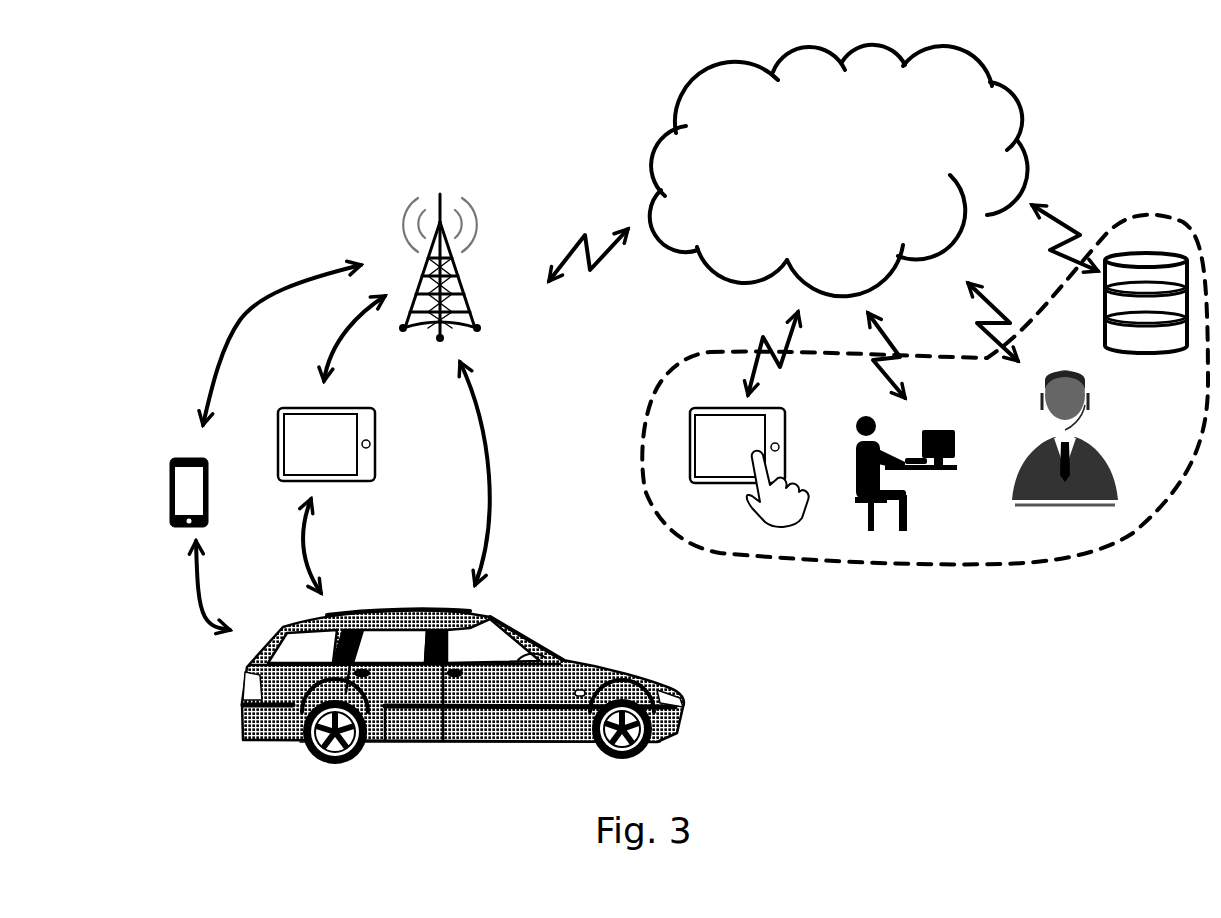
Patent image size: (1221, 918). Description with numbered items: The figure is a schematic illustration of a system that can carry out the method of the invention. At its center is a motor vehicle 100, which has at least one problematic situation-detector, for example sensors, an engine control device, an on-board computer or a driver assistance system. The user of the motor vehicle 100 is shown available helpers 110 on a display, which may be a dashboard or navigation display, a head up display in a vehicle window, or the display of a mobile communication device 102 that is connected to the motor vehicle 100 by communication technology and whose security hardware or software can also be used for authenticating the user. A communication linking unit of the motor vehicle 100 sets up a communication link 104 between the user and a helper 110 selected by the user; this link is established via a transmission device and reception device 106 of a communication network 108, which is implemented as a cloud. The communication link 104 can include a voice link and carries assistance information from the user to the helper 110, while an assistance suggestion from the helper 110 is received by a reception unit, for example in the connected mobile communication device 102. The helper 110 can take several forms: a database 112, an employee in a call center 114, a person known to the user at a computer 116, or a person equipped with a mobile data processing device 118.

The motor vehicle 100 is at (537, 632).
The mobile communication device 102 is at (187, 457).
The communication link 104 is at (288, 276).
The transmission device and reception device 106 is at (437, 190).
The communication network 108 is at (877, 176).
The helper 110 is at (1007, 560).
The database 112 is at (1150, 255).
The call center 114 is at (1073, 500).
The computer 116 is at (900, 537).
The mobile data processing device 118 is at (744, 530).